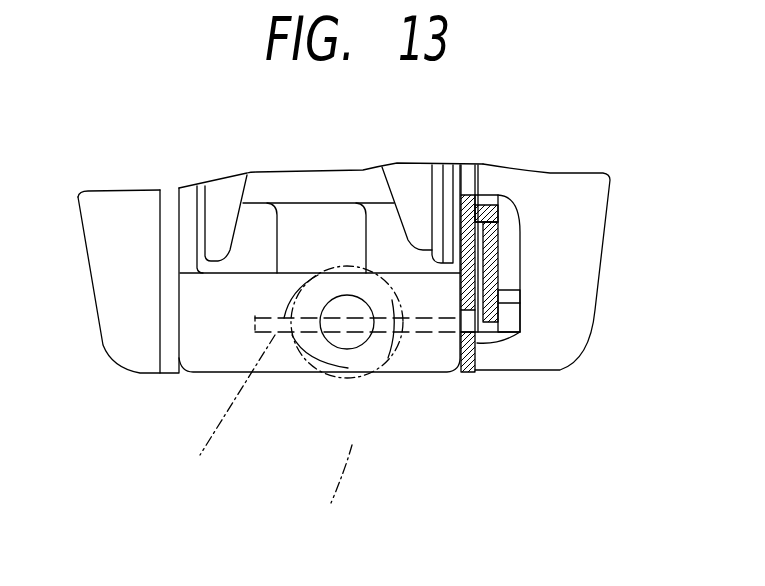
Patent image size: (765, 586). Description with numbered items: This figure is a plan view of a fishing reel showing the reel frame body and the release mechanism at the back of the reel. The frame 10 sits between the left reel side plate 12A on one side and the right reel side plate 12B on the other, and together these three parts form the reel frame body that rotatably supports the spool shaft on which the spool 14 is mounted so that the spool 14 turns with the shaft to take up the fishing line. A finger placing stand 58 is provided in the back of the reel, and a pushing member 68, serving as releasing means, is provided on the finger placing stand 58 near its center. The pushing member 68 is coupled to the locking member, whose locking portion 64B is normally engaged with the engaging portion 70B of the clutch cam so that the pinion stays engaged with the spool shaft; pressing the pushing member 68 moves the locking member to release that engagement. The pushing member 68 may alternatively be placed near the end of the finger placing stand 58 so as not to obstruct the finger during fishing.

The frame 10 is at (474, 340).
The left reel side plate 12A is at (120, 332).
The right reel side plate 12B is at (547, 352).
The spool 14 is at (412, 188).
The finger placing stand 58 is at (202, 347).
The locking portion 64B is at (503, 291).
The pushing member 68 is at (355, 335).
The engaging portion 70B is at (500, 277).